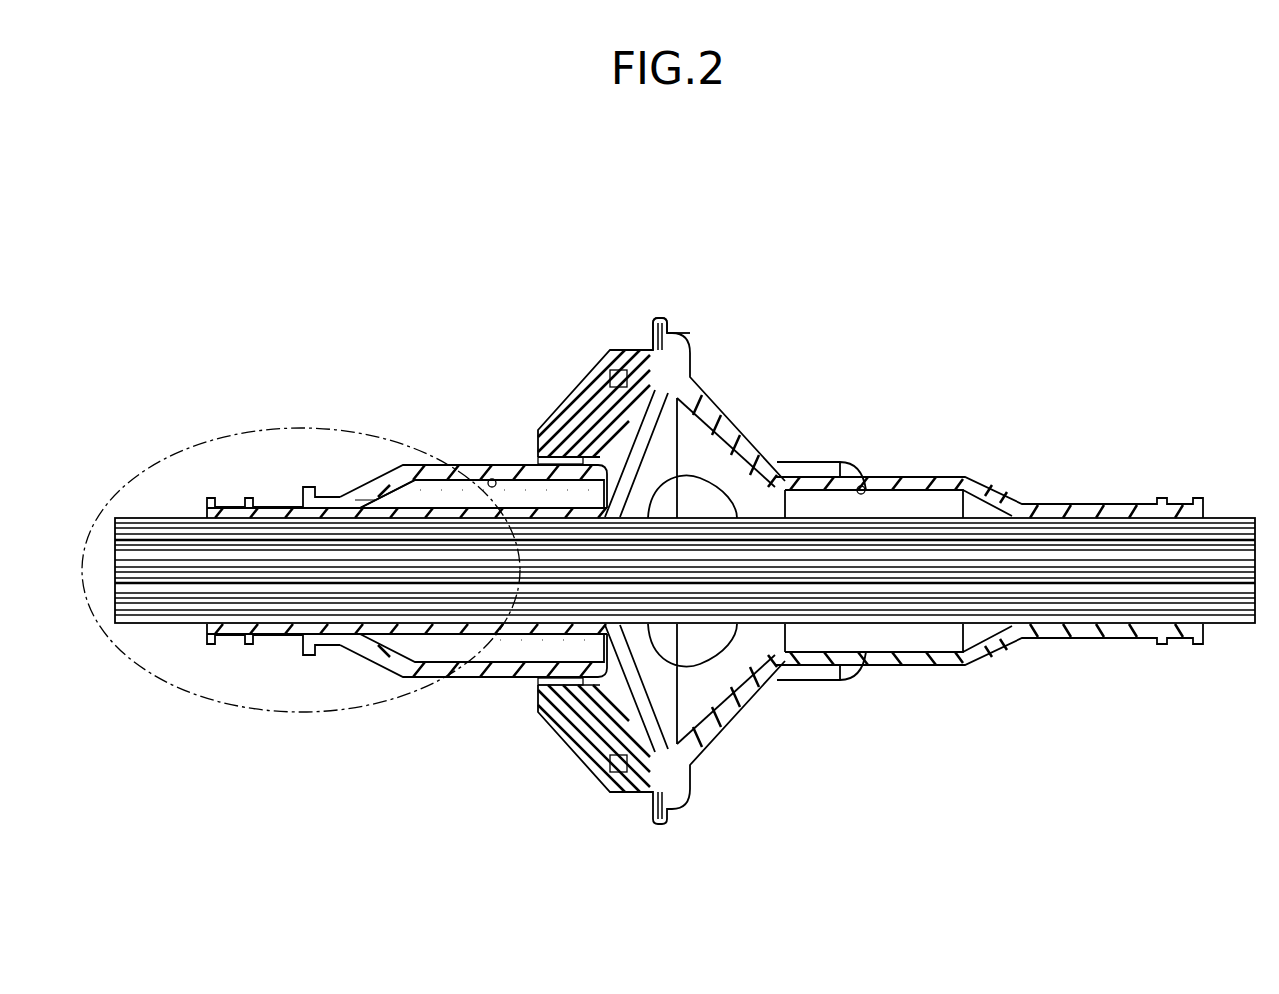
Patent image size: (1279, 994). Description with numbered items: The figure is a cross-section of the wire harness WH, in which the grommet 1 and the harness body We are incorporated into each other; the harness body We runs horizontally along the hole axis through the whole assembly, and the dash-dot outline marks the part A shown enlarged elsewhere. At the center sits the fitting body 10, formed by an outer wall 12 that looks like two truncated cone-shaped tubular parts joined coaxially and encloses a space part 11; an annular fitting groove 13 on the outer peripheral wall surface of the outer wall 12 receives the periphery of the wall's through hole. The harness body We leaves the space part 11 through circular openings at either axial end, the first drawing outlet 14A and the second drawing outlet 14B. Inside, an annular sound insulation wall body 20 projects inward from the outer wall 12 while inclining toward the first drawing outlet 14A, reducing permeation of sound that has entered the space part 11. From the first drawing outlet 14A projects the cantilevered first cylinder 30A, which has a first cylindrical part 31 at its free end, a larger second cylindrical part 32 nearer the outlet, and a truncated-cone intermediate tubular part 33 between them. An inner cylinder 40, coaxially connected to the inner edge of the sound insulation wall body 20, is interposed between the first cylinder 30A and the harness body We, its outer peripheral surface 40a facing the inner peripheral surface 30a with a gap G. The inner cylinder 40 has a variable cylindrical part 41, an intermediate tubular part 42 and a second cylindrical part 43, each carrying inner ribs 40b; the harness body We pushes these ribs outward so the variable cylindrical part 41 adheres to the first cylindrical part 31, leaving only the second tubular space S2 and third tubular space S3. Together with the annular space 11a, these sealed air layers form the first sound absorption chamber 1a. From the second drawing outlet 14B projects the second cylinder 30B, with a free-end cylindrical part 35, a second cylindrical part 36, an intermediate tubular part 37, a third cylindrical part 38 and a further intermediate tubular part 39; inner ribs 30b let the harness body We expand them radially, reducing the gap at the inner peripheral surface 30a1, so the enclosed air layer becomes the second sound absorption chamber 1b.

The wire harness WH is at (441, 157).
The grommet 1 is at (760, 228).
The first sound absorption chamber 1a is at (585, 400).
The second sound absorption chamber 1b is at (707, 647).
The fitting body 10 is at (600, 283).
The space part 11 is at (710, 468).
The annular space 11a is at (606, 449).
The outer wall 12 is at (682, 325).
The fitting groove 13 is at (653, 338).
The first drawing outlet 14A is at (530, 497).
The second drawing outlet 14B is at (790, 505).
The sound insulation wall body 20 is at (657, 447).
The first cylinder 30A is at (459, 363).
The second cylinder 30B is at (969, 401).
The inner peripheral surface 30a is at (492, 479).
The inner peripheral surface 30a1 is at (1198, 503).
The inner rib 30b is at (1141, 630).
The first cylindrical part 31 is at (310, 505).
The second cylindrical part 32 is at (420, 492).
The intermediate tubular part 33 is at (393, 497).
The cylindrical part 35 is at (1160, 498).
The second cylindrical part 36 is at (905, 477).
The intermediate tubular part 37 is at (990, 490).
The third cylindrical part 38 is at (1075, 505).
The intermediate tubular part 39 is at (1112, 505).
The inner cylinder 40 is at (240, 491).
The outer peripheral surface 40a is at (275, 505).
The inner rib 40b is at (360, 634).
The variable cylindrical part 41 is at (338, 636).
The intermediate tubular part 42 is at (277, 640).
The second cylindrical part 43 is at (223, 640).
The second tubular space S2 is at (372, 500).
The third tubular space S3 is at (417, 493).
The gap G is at (515, 660).
The part A is at (171, 683).
The harness body We is at (146, 517).